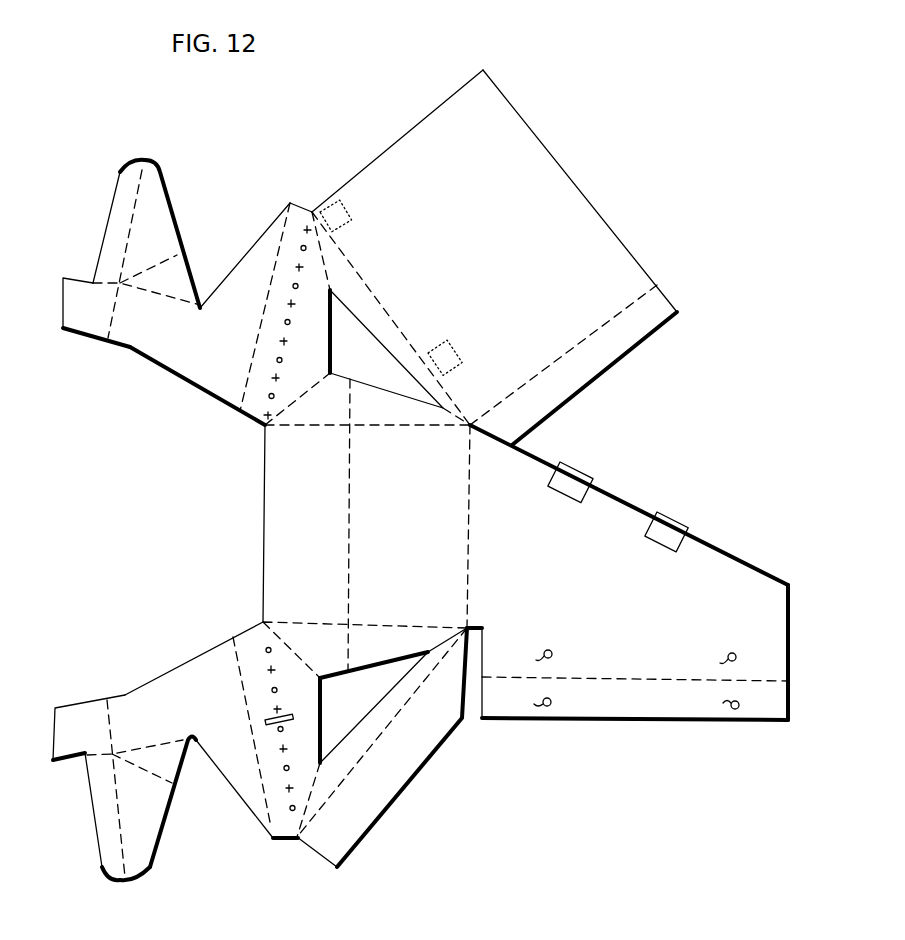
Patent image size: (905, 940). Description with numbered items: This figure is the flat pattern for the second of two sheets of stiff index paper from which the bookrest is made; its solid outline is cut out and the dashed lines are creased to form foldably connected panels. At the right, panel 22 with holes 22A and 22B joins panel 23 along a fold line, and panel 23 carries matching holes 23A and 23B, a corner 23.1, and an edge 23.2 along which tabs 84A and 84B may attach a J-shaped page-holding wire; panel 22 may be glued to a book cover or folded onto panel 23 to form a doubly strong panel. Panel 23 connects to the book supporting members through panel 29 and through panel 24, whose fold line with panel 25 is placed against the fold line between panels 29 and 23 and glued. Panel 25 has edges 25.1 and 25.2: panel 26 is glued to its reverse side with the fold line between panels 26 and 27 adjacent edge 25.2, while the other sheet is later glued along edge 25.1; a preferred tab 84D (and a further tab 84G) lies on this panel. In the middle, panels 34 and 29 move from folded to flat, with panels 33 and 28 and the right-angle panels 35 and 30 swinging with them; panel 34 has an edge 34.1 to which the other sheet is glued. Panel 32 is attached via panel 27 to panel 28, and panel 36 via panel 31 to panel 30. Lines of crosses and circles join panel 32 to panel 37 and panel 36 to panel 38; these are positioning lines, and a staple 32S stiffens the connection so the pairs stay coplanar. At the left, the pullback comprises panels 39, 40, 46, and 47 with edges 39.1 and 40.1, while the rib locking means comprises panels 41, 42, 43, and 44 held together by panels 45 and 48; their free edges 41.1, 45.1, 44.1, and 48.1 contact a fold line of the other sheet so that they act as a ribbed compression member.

The panel 22 is at (604, 707).
The hole 22A is at (713, 703).
The hole 22B is at (523, 702).
The panel 23 is at (567, 568).
The hole 23A is at (709, 664).
The hole 23B is at (524, 660).
The corner of panel 23 23.1 is at (478, 627).
The edge 23.2 is at (765, 573).
The panel 24 is at (546, 395).
The panel 25 is at (459, 275).
The edge 25.1 is at (413, 129).
The edge 25.2 is at (551, 153).
The panel 26 is at (376, 777).
The panel 27 is at (324, 777).
The panel 28 is at (367, 650).
The panel 29 is at (386, 533).
The panel 30 is at (373, 417).
The panel 31 is at (378, 346).
The panel 32 is at (284, 702).
The staple 32S is at (293, 718).
The panel 33 is at (304, 650).
The panel 34 is at (292, 533).
The edge 34.1 is at (265, 513).
The panel 35 is at (311, 416).
The panel 36 is at (298, 346).
The panel 37 is at (252, 747).
The panel 38 is at (272, 289).
The panel 39 is at (161, 712).
The edge of panel 39 39.1 is at (194, 659).
The panel 40 is at (184, 343).
The edge of panel 40 40.1 is at (207, 392).
The panel 41 is at (131, 817).
The edge 41.1 is at (137, 883).
The panel 42 is at (134, 772).
The panel 43 is at (149, 292).
The panel 44 is at (139, 242).
The edge 44.1 is at (158, 166).
The panel 45 is at (94, 817).
The edge 45.1 is at (117, 883).
The panel 46 is at (66, 745).
The panel 47 is at (74, 318).
The panel 48 is at (113, 230).
The edge 48.1 is at (137, 158).
The tab 84A is at (689, 523).
The tab 84B is at (588, 480).
The tab 84D is at (457, 366).
The cutout 84G is at (342, 218).